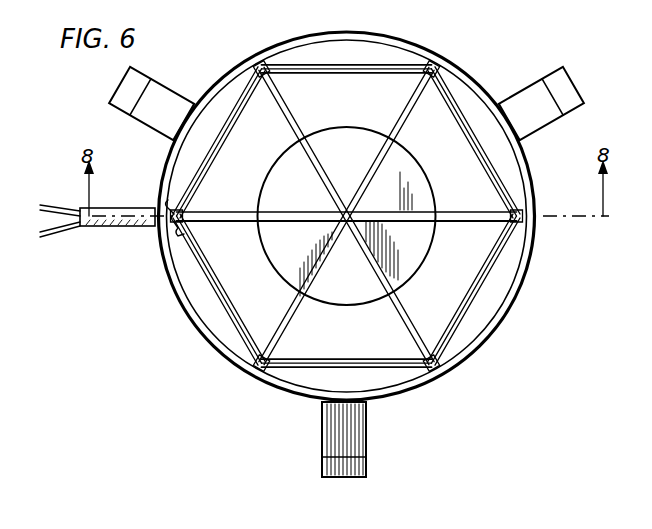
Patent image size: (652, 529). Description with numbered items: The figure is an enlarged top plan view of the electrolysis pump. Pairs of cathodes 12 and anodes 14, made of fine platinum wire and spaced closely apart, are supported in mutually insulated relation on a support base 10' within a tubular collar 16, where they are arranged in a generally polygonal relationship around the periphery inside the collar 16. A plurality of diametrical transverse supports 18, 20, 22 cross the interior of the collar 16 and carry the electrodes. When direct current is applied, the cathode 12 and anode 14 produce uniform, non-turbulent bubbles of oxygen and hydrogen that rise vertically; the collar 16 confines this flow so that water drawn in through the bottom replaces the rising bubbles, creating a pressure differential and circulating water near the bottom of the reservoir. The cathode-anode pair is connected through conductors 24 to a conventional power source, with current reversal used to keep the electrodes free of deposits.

The support base 10' is at (362, 263).
The cathode 12 is at (357, 65).
The anode 14 is at (401, 72).
The tubular collar 16 is at (480, 81).
The diametrical transverse support 18 is at (289, 103).
The diametrical transverse support 20 is at (398, 138).
The diametrical transverse support 22 is at (451, 214).
The conductors 24 is at (128, 225).